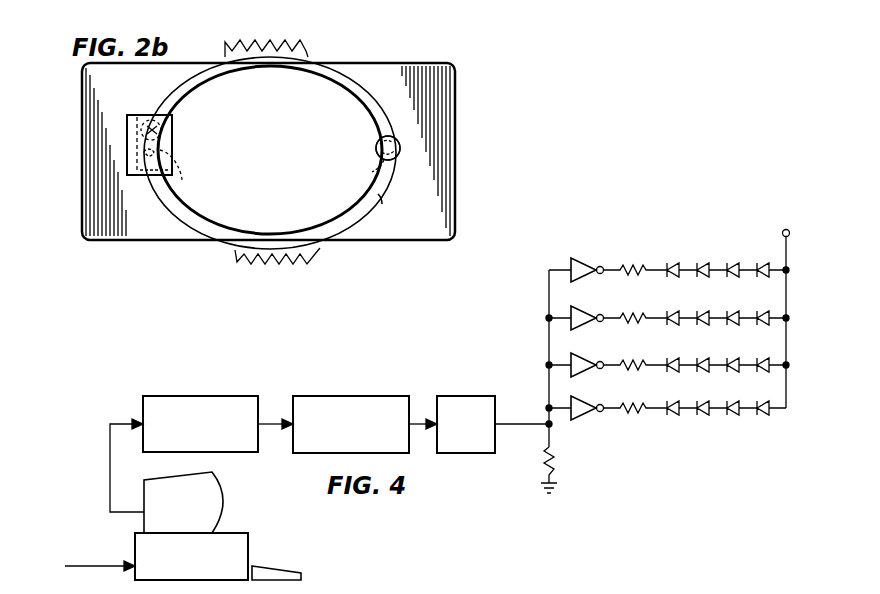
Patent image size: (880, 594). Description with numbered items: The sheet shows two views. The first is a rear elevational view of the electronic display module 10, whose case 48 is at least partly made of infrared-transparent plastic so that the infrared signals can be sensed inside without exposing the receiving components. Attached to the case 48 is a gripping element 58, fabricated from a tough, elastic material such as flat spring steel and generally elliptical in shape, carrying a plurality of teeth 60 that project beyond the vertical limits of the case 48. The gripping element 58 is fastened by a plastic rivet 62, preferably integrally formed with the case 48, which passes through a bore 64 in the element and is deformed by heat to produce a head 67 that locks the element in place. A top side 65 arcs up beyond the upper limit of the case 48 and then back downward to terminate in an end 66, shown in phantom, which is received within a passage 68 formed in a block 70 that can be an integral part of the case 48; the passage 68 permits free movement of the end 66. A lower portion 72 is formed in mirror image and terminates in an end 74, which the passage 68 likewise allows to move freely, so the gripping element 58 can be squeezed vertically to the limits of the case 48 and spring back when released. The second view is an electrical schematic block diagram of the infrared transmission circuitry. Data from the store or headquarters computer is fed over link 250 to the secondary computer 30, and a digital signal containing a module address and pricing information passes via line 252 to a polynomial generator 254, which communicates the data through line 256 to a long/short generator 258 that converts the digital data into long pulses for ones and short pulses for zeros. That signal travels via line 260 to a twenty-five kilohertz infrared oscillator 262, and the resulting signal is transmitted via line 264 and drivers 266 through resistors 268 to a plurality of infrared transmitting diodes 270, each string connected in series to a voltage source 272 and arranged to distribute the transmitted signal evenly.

In FIG. 2b, the module 10 is at (452, 60).
In FIG. 2b, the case 48 is at (451, 106).
In FIG. 2b, the gripping element 58 is at (325, 62).
In FIG. 2b, the teeth 60 is at (285, 38).
In FIG. 2b, the plastic rivet 62 is at (376, 137).
In FIG. 2b, the bore 64 is at (374, 171).
In FIG. 2b, the top side 65 is at (160, 99).
In FIG. 2b, the end 66 is at (174, 118).
In FIG. 2b, the head 67 is at (375, 149).
In FIG. 2b, the passage 68 is at (172, 156).
In FIG. 2b, the block 70 is at (172, 136).
In FIG. 2b, the lower portion 72 is at (383, 204).
In FIG. 2b, the end 74 is at (182, 175).
In FIG. 4, the secondary computer 30 is at (230, 499).
In FIG. 4, the link 250 is at (102, 564).
In FIG. 4, the line 252 is at (105, 469).
In FIG. 4, the polynomial generator 254 is at (194, 396).
In FIG. 4, the line 256 is at (262, 416).
In FIG. 4, the long/short generator 258 is at (334, 396).
In FIG. 4, the line 260 is at (424, 416).
In FIG. 4, the infrared oscillator 262 is at (450, 396).
In FIG. 4, the line 264 is at (516, 432).
In FIG. 4, the drivers 266 is at (575, 310).
In FIG. 4, the resistors 268 is at (632, 310).
In FIG. 4, the infrared transmitting diodes 270 is at (772, 258).
In FIG. 4, the voltage source 272 is at (781, 234).